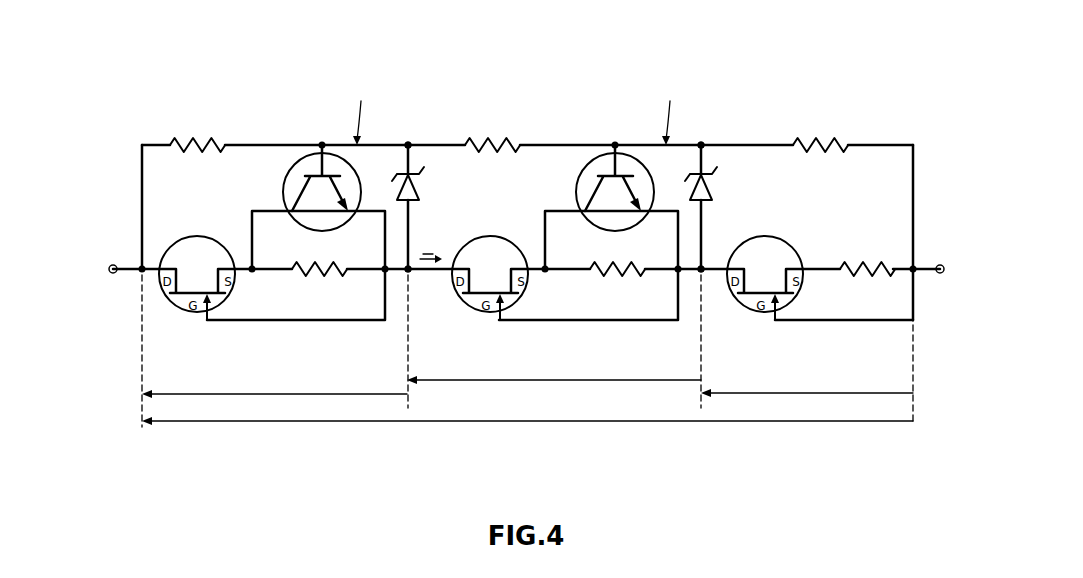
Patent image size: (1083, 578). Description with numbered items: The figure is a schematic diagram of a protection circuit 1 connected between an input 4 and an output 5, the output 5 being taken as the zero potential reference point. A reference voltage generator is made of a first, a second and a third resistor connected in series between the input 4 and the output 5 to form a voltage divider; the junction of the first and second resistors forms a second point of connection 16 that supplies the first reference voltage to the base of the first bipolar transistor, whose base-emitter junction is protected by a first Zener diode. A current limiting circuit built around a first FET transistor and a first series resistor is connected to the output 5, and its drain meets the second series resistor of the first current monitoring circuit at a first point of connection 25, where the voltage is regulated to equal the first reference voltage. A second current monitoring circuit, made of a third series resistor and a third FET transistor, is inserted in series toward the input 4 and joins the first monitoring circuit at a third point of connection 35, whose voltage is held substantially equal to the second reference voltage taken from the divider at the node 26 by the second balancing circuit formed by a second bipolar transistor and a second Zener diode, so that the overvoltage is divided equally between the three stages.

The protection circuit 1 is at (215, 75).
The input 4 is at (108, 264).
The output 5 is at (943, 263).
The second point of connection 16 is at (701, 140).
The second reference voltage node 26 is at (408, 140).
The first point of connection 25 is at (705, 273).
The third point of connection 35 is at (411, 273).